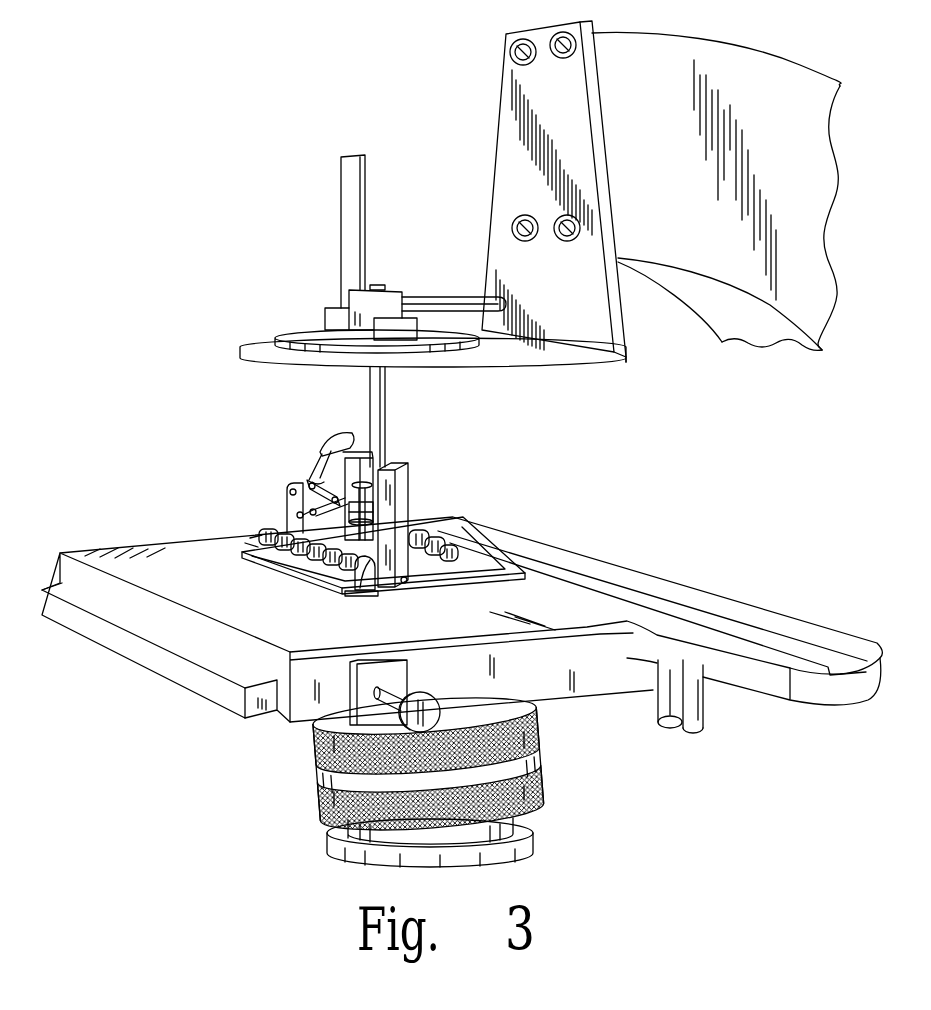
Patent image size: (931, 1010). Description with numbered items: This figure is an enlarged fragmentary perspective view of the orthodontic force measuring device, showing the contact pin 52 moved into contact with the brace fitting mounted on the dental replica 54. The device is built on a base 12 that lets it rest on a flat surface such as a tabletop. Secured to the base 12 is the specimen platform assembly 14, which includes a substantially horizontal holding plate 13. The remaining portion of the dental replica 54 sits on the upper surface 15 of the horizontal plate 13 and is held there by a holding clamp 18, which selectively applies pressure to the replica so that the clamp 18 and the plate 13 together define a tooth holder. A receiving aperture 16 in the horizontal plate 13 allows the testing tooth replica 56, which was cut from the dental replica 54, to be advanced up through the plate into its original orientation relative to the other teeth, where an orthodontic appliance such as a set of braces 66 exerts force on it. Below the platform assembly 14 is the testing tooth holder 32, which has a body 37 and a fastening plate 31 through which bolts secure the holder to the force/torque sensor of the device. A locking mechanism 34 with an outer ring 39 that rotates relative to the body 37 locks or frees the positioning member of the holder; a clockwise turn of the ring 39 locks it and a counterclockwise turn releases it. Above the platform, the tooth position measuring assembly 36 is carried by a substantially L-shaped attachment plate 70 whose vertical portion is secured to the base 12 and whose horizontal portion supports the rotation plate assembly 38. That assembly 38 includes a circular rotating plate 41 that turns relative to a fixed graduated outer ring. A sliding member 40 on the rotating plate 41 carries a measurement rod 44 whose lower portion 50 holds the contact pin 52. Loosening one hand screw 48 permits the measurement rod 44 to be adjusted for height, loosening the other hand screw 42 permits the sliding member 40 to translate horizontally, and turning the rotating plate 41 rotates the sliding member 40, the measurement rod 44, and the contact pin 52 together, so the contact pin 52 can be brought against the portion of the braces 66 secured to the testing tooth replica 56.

The base 12 is at (797, 77).
The horizontal holding plate 13 is at (178, 553).
The specimen platform assembly 14 is at (88, 530).
The upper surface 15 is at (190, 598).
The receiving aperture 16 is at (295, 588).
The holding clamp 18 is at (292, 505).
The fastening plate 31 is at (532, 842).
The testing tooth holder 32 is at (582, 767).
The locking mechanism 34 is at (296, 755).
The tooth position measuring assembly 36 is at (283, 261).
The body 37 is at (315, 790).
The rotation plate assembly 38 is at (258, 328).
The outer ring 39 is at (543, 735).
The sliding member 40 is at (327, 320).
The rotating plate 41 is at (322, 332).
The hand screw 42 is at (348, 172).
The measurement rod 44 is at (382, 383).
The hand screw 48 is at (425, 300).
The lower portion 50 is at (405, 515).
The contact pin 52 is at (365, 591).
The dental replica 54 is at (280, 537).
The testing tooth replica 56 is at (373, 594).
The set of braces 66 is at (250, 540).
The attachment plate 70 is at (515, 168).